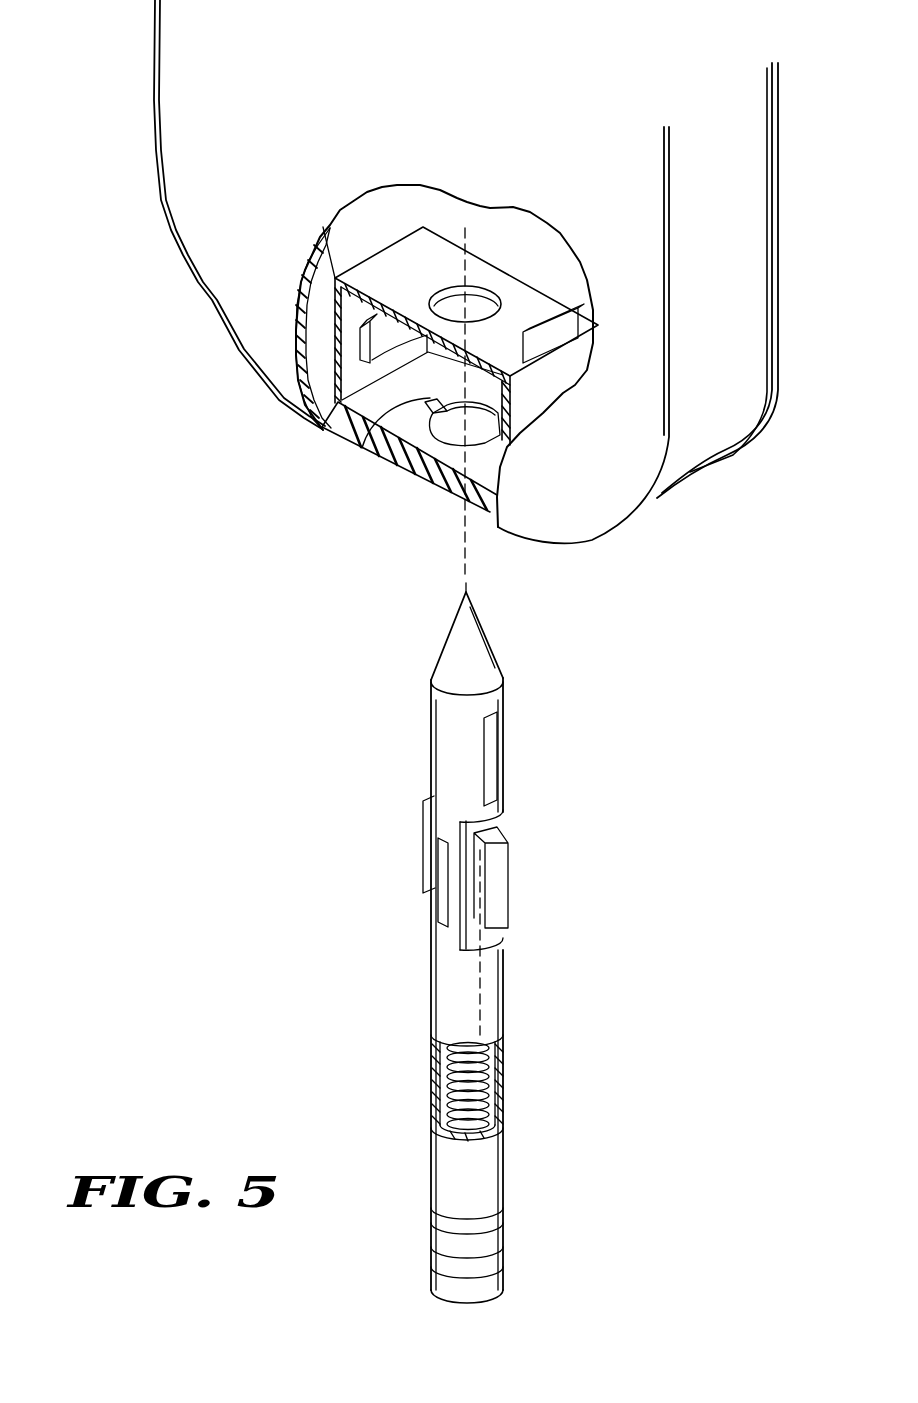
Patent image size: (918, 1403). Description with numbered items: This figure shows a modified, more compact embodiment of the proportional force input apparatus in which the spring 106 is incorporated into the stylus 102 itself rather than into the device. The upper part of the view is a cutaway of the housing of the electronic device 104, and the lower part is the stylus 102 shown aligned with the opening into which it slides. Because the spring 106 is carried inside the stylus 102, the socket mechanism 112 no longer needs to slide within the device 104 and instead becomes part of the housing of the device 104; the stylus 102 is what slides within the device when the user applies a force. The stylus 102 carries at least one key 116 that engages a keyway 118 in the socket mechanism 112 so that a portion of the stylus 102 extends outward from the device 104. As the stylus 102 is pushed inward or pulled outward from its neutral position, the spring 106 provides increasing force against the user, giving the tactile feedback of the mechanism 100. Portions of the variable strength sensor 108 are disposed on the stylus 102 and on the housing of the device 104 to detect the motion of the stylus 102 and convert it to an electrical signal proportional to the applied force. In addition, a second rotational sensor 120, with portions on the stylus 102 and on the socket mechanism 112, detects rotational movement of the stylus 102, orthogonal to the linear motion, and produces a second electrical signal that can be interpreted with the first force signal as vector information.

The mechanism 100 is at (244, 440).
The stylus 102 is at (443, 982).
The electronic device 104 is at (213, 277).
The spring 106 is at (490, 1100).
The variable strength sensor 108 is at (575, 327).
The socket mechanism 112 is at (508, 287).
The key 116 is at (506, 885).
The keyway 118 is at (483, 400).
The second rotational sensor 120 is at (358, 342).